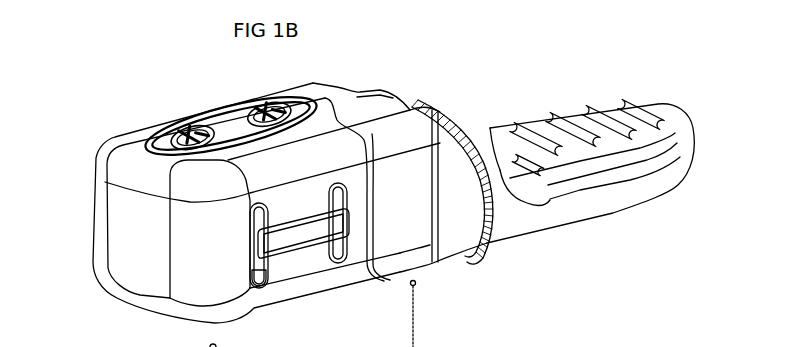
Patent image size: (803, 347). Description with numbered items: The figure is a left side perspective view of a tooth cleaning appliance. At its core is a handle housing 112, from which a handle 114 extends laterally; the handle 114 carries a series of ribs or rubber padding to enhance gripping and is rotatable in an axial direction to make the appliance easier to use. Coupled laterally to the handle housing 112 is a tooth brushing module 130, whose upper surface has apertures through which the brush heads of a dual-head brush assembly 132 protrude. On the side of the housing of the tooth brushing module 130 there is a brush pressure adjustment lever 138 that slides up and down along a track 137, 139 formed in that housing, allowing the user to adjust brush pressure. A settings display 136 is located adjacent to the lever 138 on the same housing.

The tooth brushing module 130 is at (90, 148).
The dual-head brush assembly 132 is at (193, 147).
The settings display 136 is at (245, 247).
The track 137 is at (238, 286).
The brush pressure adjustment lever 138 is at (290, 245).
The track 139 is at (338, 262).
The handle housing 112 is at (440, 126).
The handle 114 is at (681, 175).